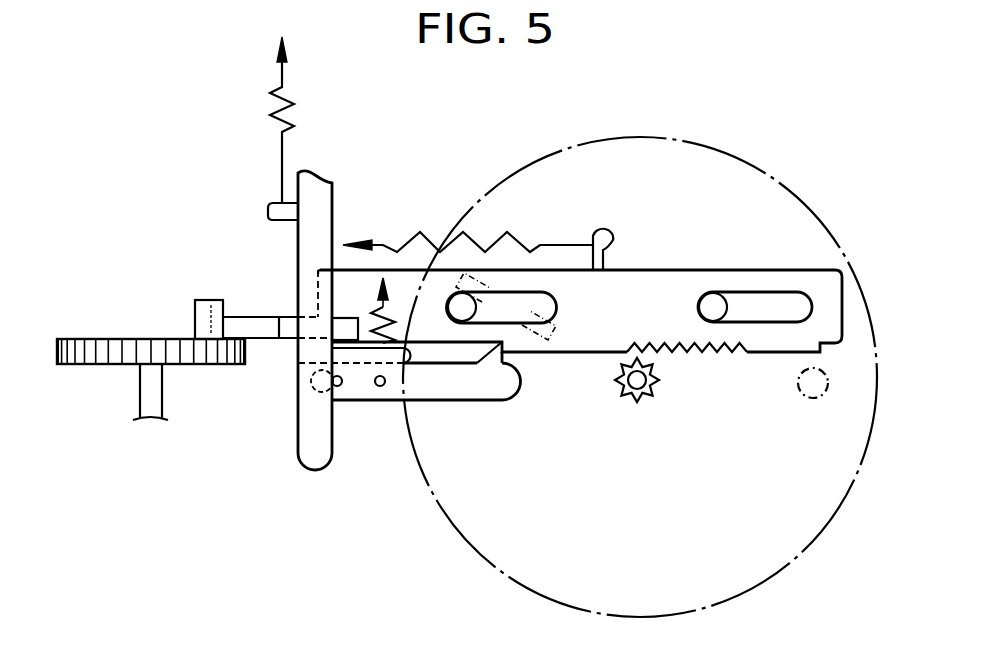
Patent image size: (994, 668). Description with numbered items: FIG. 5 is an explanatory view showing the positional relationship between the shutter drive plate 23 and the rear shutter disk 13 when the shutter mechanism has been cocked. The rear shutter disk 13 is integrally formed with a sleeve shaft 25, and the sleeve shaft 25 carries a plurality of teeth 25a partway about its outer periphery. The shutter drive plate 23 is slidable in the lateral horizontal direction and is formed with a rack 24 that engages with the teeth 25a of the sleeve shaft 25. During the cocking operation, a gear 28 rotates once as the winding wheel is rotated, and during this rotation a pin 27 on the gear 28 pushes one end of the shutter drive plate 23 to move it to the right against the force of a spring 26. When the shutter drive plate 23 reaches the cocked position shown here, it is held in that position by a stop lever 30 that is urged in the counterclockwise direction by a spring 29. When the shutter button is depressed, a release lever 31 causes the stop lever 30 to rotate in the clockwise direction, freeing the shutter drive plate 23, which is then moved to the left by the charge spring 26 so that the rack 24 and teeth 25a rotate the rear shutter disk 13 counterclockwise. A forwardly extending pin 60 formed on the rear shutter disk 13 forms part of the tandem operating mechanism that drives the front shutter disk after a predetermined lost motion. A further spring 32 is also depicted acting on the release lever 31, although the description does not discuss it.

The rear shutter disk 13 is at (822, 222).
The shutter drive plate 23 is at (688, 270).
The rack 24 is at (728, 354).
The sleeve shaft 25 is at (618, 380).
The teeth 25a is at (658, 393).
The spring 26 is at (432, 245).
The pin 27 is at (210, 300).
The gear 28 is at (222, 362).
The spring 29 is at (400, 345).
The stop lever 30 is at (483, 388).
The release lever 31 is at (315, 470).
The spring 32 is at (295, 128).
The pin 60 is at (830, 386).